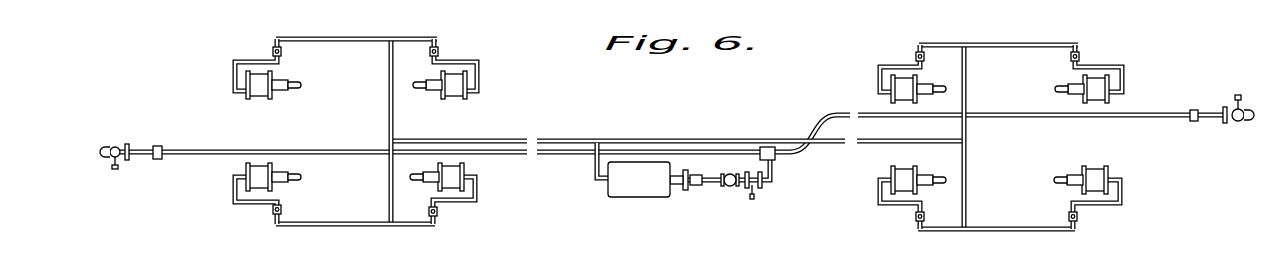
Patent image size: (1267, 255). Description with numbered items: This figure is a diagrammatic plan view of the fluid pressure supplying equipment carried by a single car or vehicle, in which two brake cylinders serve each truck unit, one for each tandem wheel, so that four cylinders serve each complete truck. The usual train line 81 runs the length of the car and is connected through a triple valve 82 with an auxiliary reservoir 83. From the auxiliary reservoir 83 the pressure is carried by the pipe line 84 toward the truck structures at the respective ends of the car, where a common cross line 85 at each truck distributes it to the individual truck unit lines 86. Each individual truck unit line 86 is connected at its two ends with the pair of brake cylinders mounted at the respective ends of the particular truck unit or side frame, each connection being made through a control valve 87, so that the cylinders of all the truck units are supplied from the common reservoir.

The train line 81 is at (193, 150).
The triple valve 82 is at (681, 190).
The auxiliary reservoir 83 is at (639, 179).
The pipe line 84 is at (635, 138).
The common cross line 85 is at (388, 107).
The individual truck unit line 86 is at (330, 39).
The control valve 87 is at (272, 50).